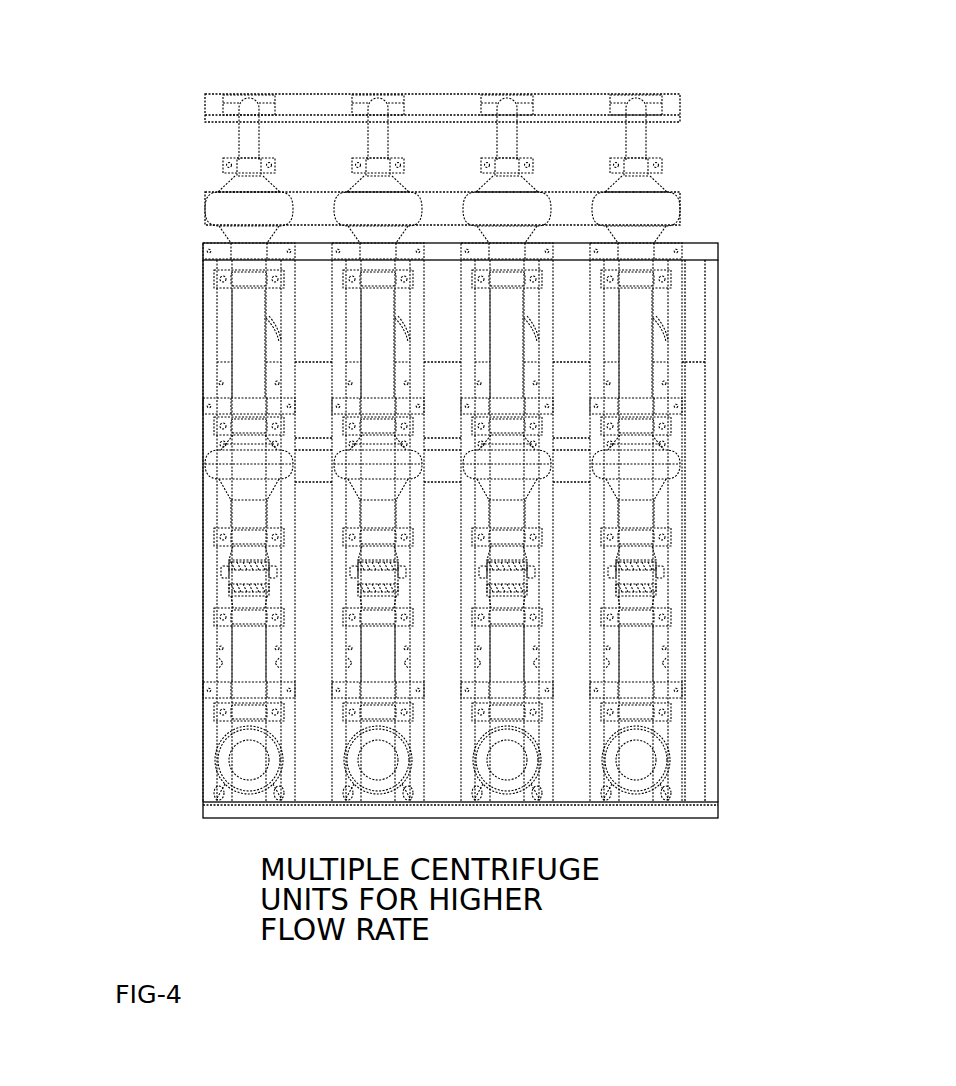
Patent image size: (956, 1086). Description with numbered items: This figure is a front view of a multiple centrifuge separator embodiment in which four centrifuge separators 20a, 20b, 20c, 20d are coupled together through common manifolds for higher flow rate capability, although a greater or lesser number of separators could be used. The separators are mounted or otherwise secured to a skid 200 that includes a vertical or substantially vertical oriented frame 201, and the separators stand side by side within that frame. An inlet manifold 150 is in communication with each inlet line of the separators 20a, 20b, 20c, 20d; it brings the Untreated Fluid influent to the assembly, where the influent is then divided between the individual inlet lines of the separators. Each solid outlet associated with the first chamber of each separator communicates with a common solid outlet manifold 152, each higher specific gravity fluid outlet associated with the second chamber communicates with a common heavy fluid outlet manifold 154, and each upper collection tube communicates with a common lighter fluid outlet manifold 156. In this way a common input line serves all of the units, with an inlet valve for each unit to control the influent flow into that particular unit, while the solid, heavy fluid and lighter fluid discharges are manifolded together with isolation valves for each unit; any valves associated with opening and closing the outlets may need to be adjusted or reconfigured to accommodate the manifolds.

The centrifuge separator 20a is at (203, 623).
The centrifuge separator 20b is at (324, 611).
The centrifuge separator 20c is at (561, 592).
The centrifuge separator 20d is at (692, 578).
The inlet manifold 150 is at (318, 400).
The common solid outlet manifold 152 is at (315, 468).
The common heavy fluid outlet manifold 154 is at (212, 196).
The common lighter fluid outlet manifold 156 is at (212, 100).
The skid 200 is at (657, 812).
The frame 201 is at (720, 603).